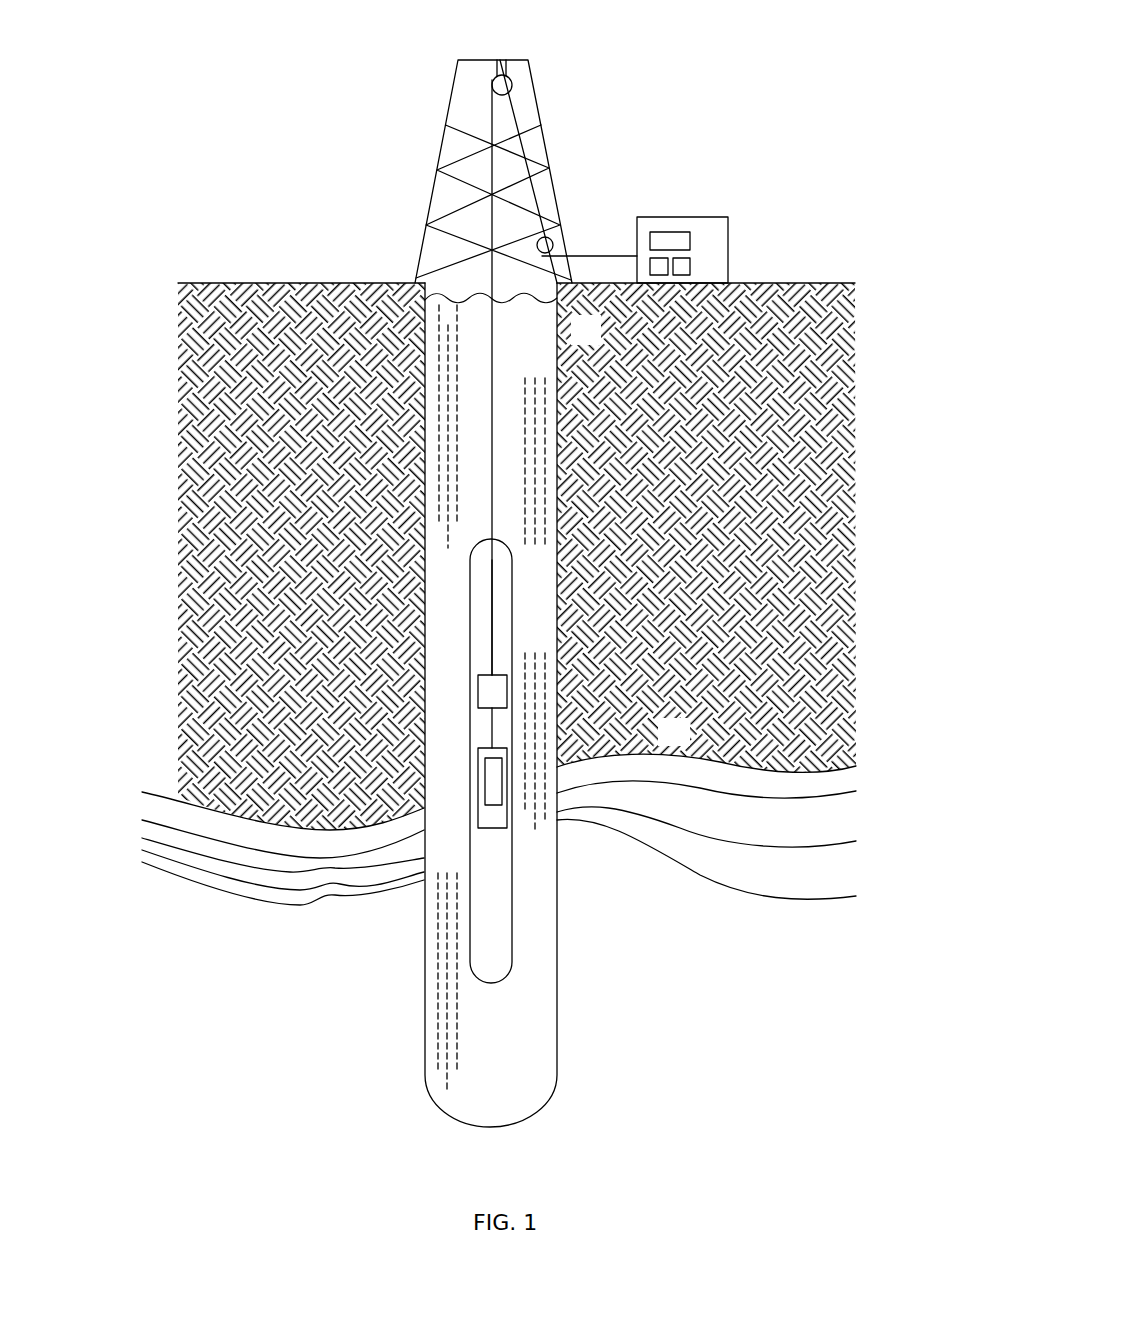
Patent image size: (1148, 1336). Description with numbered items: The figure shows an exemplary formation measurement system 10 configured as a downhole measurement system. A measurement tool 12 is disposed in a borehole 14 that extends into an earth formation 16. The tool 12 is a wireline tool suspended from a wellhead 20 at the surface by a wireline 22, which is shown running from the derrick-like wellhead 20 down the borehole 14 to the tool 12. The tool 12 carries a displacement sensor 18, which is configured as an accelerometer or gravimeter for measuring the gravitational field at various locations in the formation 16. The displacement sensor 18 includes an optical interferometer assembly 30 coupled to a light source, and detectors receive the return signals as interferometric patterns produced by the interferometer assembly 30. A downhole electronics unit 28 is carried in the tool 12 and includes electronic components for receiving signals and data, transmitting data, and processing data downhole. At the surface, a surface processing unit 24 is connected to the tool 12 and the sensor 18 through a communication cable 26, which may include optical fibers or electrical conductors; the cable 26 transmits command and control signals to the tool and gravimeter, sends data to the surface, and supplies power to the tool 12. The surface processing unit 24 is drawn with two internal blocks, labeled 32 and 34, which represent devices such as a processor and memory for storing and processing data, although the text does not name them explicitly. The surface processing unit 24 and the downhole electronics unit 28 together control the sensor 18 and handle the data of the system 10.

The downhole measurement system 10 is at (286, 132).
The measurement tool 12 is at (500, 902).
The borehole 14 is at (441, 1058).
The earth formation 16 is at (687, 744).
The displacement sensor 18 is at (487, 828).
The wellhead 20 is at (438, 172).
The wireline 22 is at (494, 368).
The surface processing unit 24 is at (728, 247).
The communication cable 26 is at (492, 592).
The downhole electronics unit 28 is at (482, 688).
The optical interferometer assembly 30 is at (490, 780).
The processor 32 is at (650, 241).
The memory 34 is at (686, 268).